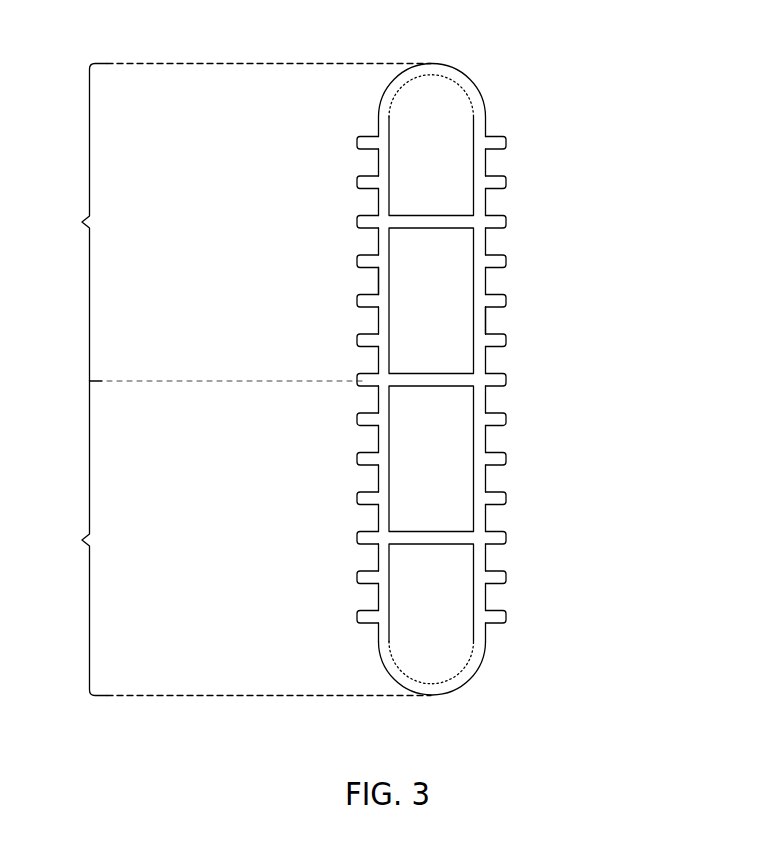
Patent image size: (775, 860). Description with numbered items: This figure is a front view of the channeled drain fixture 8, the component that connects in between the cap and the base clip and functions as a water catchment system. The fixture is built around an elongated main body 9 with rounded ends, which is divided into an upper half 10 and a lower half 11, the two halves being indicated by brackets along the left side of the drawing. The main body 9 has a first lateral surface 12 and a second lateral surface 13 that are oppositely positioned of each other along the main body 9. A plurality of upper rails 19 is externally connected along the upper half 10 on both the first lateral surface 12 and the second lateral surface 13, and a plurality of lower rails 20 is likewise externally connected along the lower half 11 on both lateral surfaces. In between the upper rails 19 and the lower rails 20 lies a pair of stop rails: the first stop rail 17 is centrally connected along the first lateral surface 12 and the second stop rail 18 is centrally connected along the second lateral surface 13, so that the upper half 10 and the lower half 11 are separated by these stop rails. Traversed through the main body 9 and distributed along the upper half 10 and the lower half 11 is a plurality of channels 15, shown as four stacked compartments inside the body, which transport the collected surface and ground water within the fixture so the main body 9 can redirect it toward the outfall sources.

The channeled drain fixture 8 is at (676, 452).
The main body 9 is at (432, 63).
The upper half 10 is at (244, 223).
The lower half 11 is at (244, 538).
The first lateral surface 12 is at (378, 285).
The second lateral surface 13 is at (486, 313).
The plurality of channels 15 is at (442, 164).
The first stop rail 17 is at (357, 375).
The second stop rail 18 is at (506, 375).
The plurality of upper rails 19 is at (357, 138).
The plurality of lower rails 20 is at (357, 454).